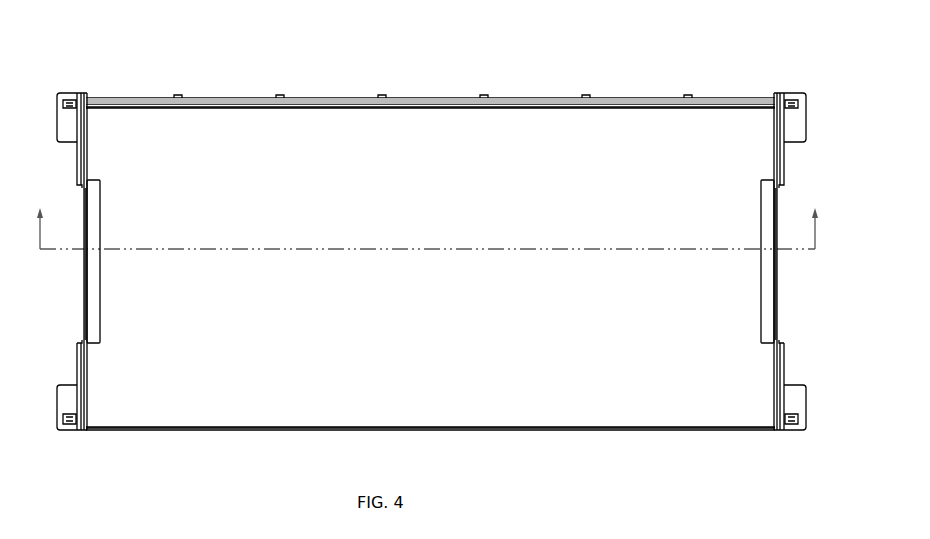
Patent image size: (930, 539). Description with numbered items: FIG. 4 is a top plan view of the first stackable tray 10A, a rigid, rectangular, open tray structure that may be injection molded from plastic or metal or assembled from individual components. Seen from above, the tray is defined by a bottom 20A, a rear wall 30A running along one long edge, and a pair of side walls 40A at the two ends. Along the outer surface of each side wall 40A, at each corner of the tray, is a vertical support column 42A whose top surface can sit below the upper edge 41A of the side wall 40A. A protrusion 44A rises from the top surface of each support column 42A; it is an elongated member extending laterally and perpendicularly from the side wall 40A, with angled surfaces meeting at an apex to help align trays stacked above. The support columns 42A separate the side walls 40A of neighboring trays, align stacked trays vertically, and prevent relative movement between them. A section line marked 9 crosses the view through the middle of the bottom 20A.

The first stackable tray 10A is at (470, 61).
The bottom 20A is at (455, 188).
The rear wall 30A is at (232, 108).
The side wall 40A is at (88, 228).
The upper edge 41A is at (84, 157).
The support column 42A is at (69, 132).
The protrusion 44A is at (70, 101).
The section line 9- 9 is at (426, 223).